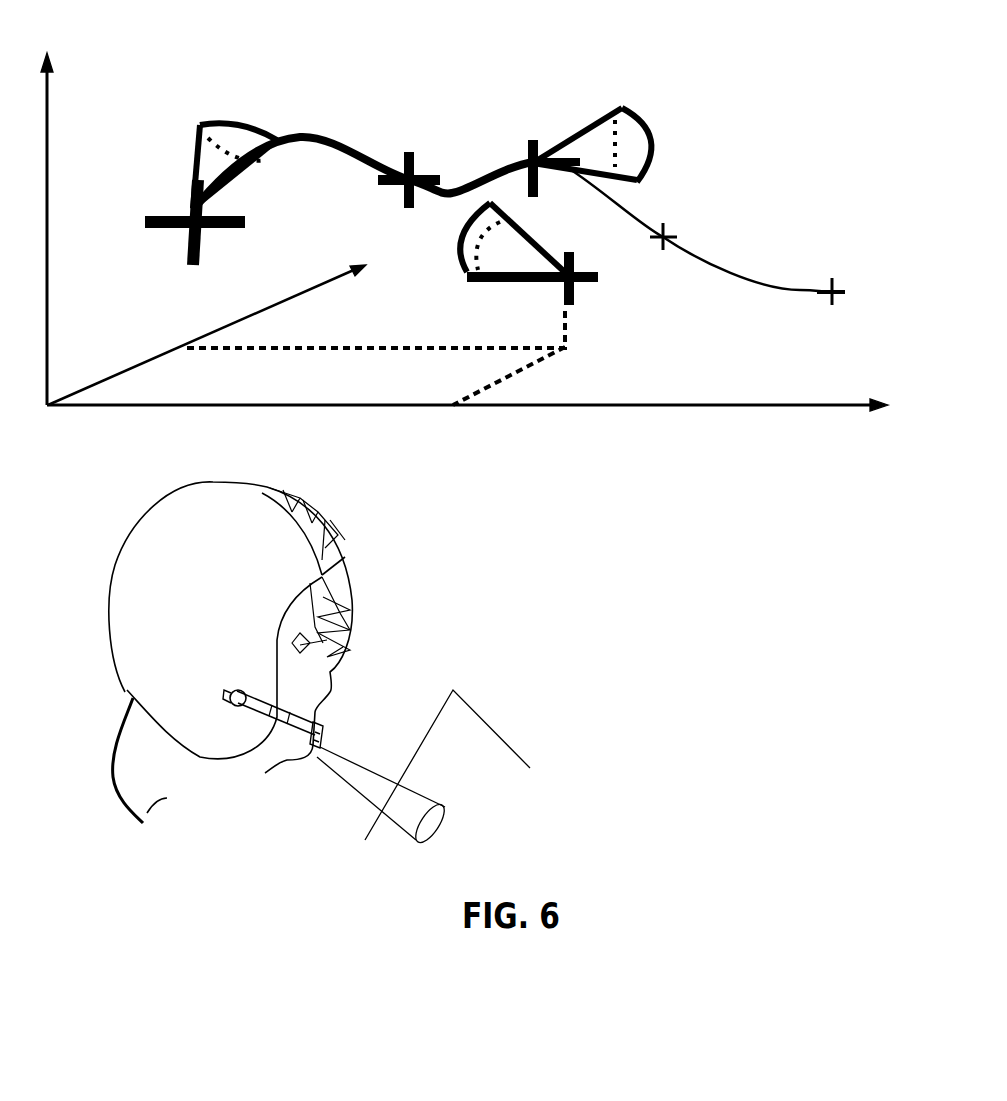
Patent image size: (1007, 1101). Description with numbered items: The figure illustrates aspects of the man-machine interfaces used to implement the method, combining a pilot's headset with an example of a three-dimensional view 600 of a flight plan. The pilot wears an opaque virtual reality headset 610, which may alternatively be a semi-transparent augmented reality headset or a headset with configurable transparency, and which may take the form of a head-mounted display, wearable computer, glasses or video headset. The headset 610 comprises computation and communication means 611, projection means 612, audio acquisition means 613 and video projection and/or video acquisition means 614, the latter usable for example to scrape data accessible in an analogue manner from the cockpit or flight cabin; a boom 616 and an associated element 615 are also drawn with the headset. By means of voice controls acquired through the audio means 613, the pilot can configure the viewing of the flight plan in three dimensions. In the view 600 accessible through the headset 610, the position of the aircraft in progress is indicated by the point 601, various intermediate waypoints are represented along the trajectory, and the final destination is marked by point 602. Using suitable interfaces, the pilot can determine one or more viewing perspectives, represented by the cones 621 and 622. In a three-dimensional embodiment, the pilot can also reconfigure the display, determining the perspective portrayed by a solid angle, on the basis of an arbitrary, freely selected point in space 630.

The trajectory diagram 600 is at (777, 60).
The point marking the position of the aircraft in progress 601 is at (207, 228).
The final destination point 602 is at (834, 282).
The cone 621 is at (208, 118).
The cone 622 is at (650, 128).
The arbitrary point in space 630 is at (570, 282).
The virtual reality headset 610 is at (143, 522).
The computation and communication means 611 is at (302, 485).
The projection means 612 is at (333, 517).
The audio acquisition means 613 is at (330, 723).
The video projection and/or video acquisition means 614 is at (333, 740).
The beam indicator 615 is at (502, 732).
The microphone boom 616 is at (257, 717).